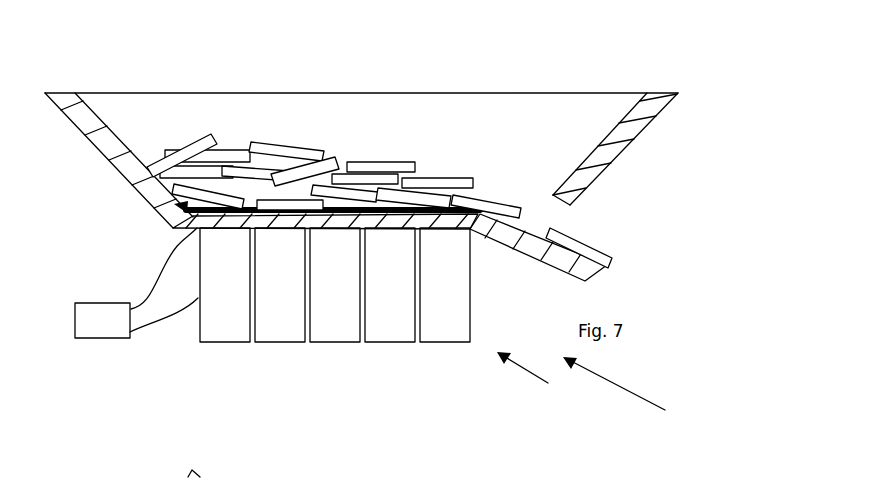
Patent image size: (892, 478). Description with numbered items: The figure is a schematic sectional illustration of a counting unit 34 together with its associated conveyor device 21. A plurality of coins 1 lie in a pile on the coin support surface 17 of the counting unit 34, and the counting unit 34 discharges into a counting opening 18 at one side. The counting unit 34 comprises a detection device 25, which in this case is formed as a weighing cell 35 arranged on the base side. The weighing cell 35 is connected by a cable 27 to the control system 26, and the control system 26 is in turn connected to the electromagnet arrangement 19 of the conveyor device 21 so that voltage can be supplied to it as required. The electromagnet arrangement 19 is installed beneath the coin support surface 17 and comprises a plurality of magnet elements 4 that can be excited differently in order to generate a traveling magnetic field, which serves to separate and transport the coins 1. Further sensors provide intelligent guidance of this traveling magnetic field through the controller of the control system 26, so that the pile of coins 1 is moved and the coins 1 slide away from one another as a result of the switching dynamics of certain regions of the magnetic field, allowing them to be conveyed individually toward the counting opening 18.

The coins 1 is at (295, 148).
The magnet elements 4 is at (240, 320).
The coin support surface 17 is at (197, 228).
The counting opening 18 is at (575, 214).
The electromagnet arrangement 19 is at (535, 376).
The conveyor device 21 is at (634, 393).
The detection device 25 is at (176, 204).
The control system 26 is at (102, 320).
The cable 27 is at (140, 300).
The counting unit 34 is at (486, 58).
The weighing cell 35 is at (177, 221).